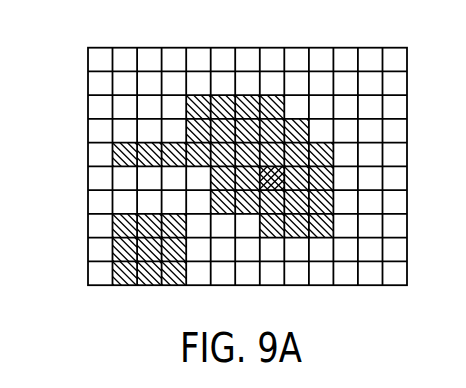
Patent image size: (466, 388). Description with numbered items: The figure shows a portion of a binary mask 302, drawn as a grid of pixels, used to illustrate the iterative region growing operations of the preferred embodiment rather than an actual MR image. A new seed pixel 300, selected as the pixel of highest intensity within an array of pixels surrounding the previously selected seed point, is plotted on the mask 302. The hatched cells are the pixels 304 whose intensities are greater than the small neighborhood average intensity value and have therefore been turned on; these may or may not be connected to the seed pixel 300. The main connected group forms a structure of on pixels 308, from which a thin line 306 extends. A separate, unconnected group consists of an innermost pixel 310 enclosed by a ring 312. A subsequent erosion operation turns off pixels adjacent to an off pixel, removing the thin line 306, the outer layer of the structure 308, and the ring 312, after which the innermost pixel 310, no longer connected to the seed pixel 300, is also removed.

The seed pixel 300 is at (281, 172).
The binary mask 302 is at (414, 56).
The on pixels 304 is at (342, 174).
The thin line 306 is at (148, 142).
The structure of on pixels 308 is at (244, 88).
The innermost pixel 310 is at (148, 234).
The ring 312 is at (112, 273).